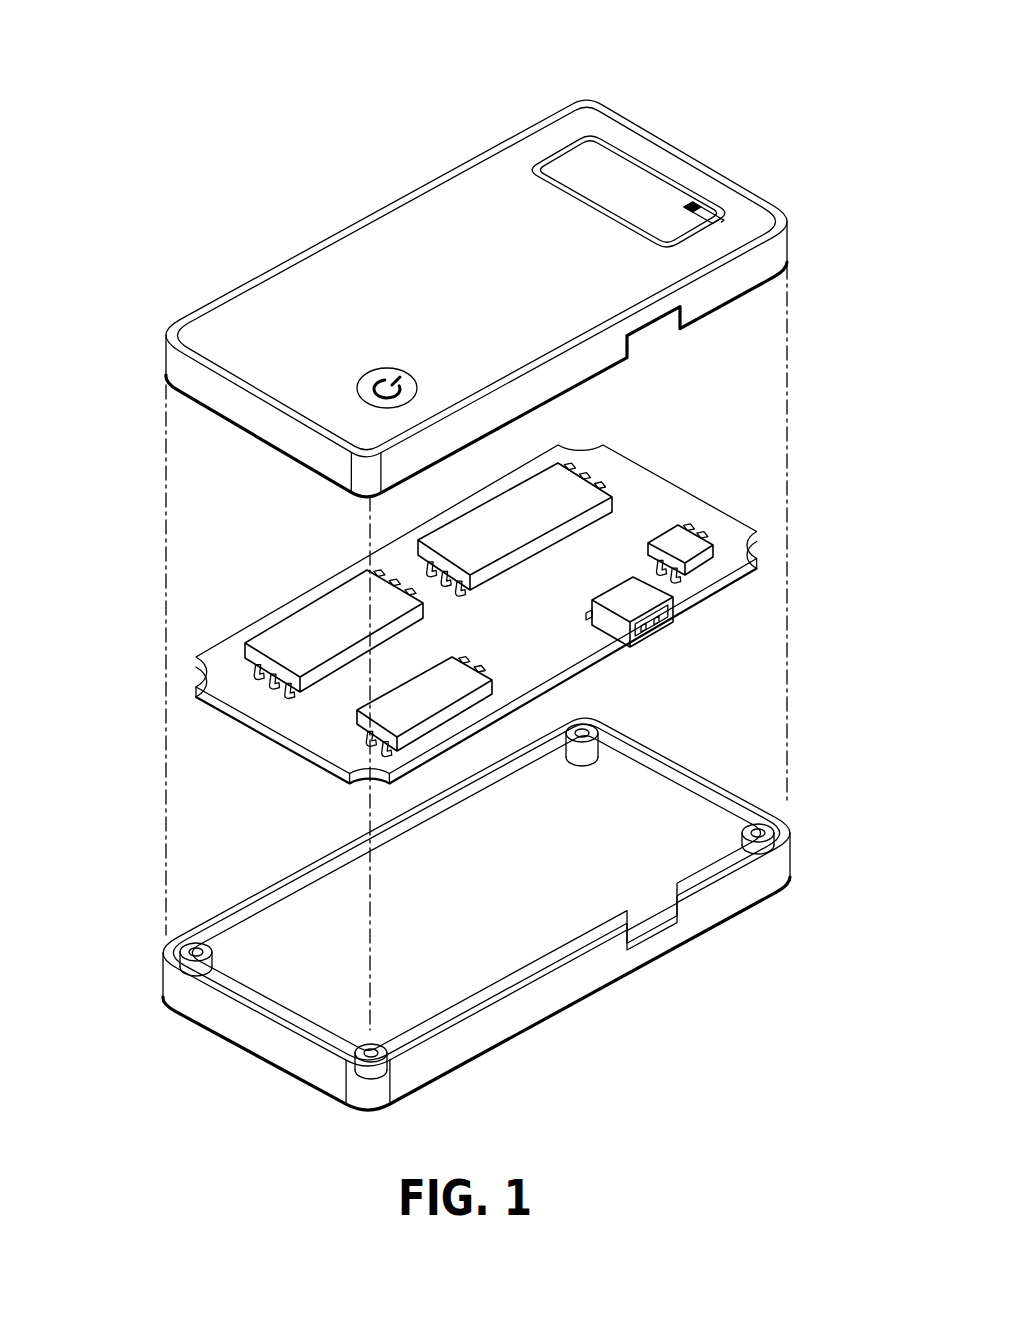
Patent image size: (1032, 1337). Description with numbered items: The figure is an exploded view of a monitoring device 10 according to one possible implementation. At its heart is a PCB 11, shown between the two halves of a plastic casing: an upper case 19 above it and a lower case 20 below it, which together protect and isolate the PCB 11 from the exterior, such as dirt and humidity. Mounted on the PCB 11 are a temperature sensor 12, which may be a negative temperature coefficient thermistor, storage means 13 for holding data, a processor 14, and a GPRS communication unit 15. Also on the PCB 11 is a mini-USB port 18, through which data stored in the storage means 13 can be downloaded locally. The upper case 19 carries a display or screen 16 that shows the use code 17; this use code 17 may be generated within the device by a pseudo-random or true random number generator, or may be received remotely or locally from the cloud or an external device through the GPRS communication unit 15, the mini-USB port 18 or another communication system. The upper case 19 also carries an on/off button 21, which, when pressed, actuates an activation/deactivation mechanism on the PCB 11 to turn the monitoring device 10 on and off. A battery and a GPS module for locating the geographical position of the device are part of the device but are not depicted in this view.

The monitoring device 10 is at (692, 104).
The PCB 11 is at (229, 713).
The temperature sensor 12 is at (688, 548).
The storage means 13 is at (568, 495).
The processor 14 is at (390, 715).
The GPRS communication unit 15 is at (307, 638).
The display or screen 16 is at (567, 140).
The use code 17 is at (557, 165).
The mini-USB port 18 is at (667, 628).
The upper case 19 is at (750, 187).
The lower case 20 is at (707, 900).
The on/off button 21 is at (360, 377).